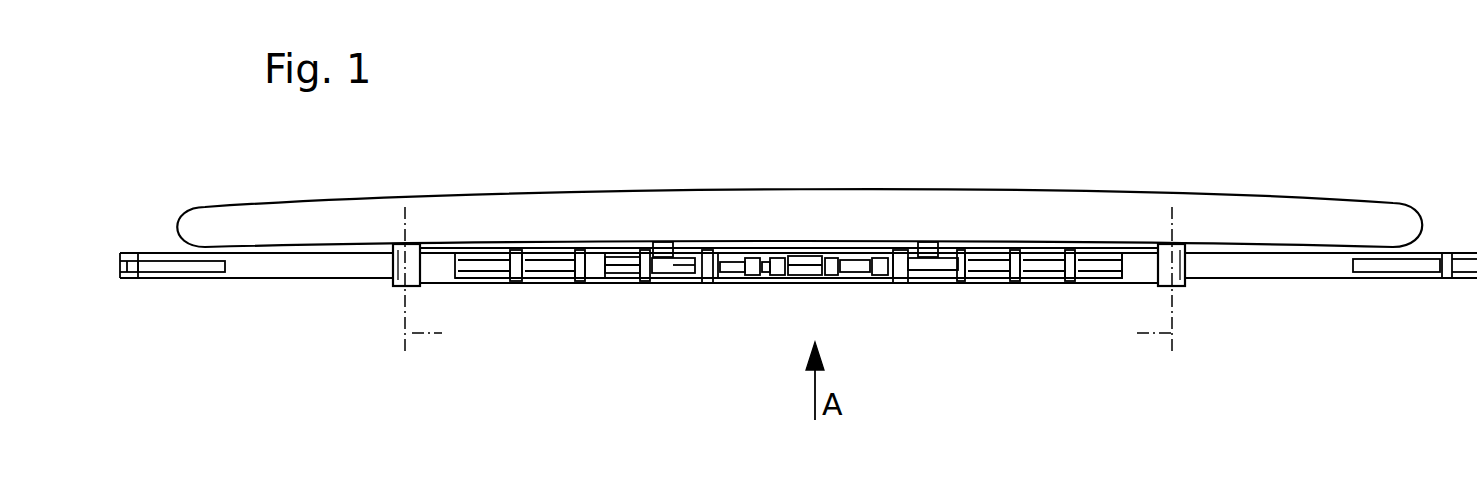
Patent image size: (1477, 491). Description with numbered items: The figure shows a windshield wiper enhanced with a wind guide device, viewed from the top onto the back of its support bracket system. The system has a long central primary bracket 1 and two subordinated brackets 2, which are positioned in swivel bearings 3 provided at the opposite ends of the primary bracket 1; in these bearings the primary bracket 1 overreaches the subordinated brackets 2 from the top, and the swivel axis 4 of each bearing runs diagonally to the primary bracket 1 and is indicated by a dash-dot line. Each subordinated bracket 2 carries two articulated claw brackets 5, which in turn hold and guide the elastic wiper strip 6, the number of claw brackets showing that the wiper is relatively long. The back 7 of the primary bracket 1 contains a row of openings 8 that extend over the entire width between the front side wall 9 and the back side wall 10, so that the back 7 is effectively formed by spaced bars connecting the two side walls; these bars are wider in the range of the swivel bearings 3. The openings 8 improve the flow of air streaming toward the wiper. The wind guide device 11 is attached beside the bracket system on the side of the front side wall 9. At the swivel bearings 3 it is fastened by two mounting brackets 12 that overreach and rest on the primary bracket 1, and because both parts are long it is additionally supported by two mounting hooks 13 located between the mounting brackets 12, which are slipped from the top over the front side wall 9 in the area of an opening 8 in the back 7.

The primary bracket 1 is at (859, 285).
The subordinated brackets 2 is at (267, 268).
The swivel bearings 3 is at (398, 290).
The swivel axis 4 is at (788, 281).
The claw brackets 5 is at (168, 271).
The elastic wiper strip 6 is at (1465, 273).
The back 7 is at (711, 284).
The openings 8 is at (948, 284).
The front side wall 9 is at (992, 248).
The back side wall 10 is at (991, 284).
The wind guide device 11 is at (1243, 218).
The mounting brackets 12 is at (412, 262).
The mounting hooks 13 is at (664, 242).